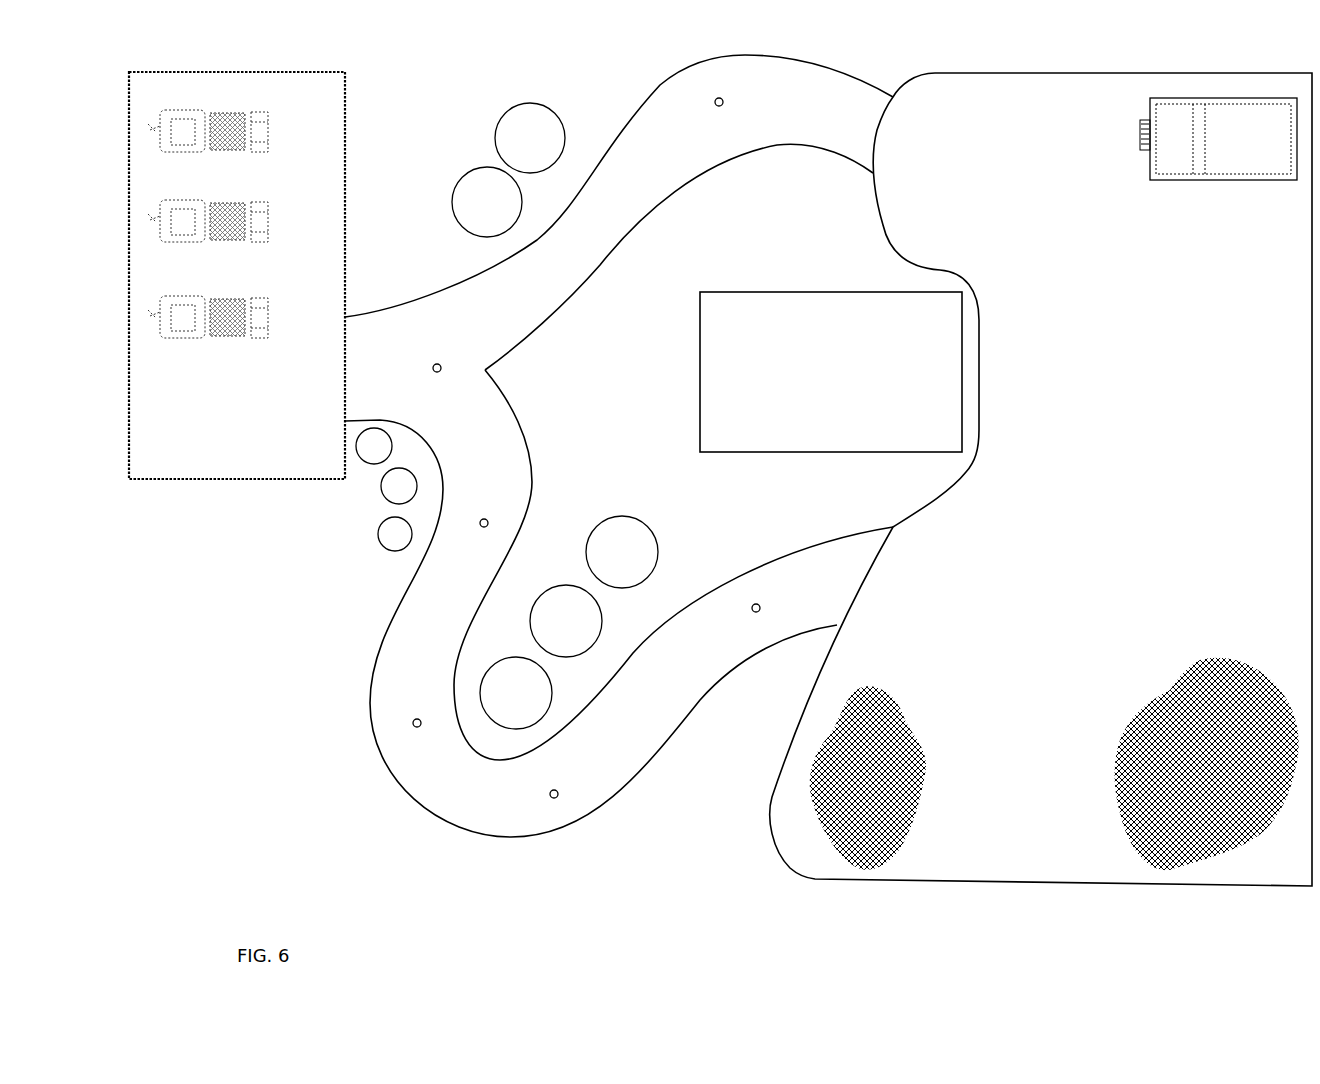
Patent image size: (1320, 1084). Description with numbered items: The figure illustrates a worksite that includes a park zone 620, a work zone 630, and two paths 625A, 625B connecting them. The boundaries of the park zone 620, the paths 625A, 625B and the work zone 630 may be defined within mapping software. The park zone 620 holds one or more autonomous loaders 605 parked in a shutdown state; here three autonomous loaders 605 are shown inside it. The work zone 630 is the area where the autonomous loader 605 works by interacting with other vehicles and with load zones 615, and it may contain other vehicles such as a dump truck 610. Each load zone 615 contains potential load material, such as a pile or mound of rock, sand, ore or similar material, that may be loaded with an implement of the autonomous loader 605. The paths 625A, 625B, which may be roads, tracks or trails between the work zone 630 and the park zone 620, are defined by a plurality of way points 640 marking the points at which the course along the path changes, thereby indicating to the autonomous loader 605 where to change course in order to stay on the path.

The autonomous loader 605 is at (150, 125).
The dump truck 610 is at (1140, 130).
The load zone 615 is at (868, 692).
The park zone 620 is at (237, 275).
The path 625A is at (619, 212).
The path 625B is at (619, 603).
The work zone 630 is at (1006, 479).
The way point 640 is at (716, 99).